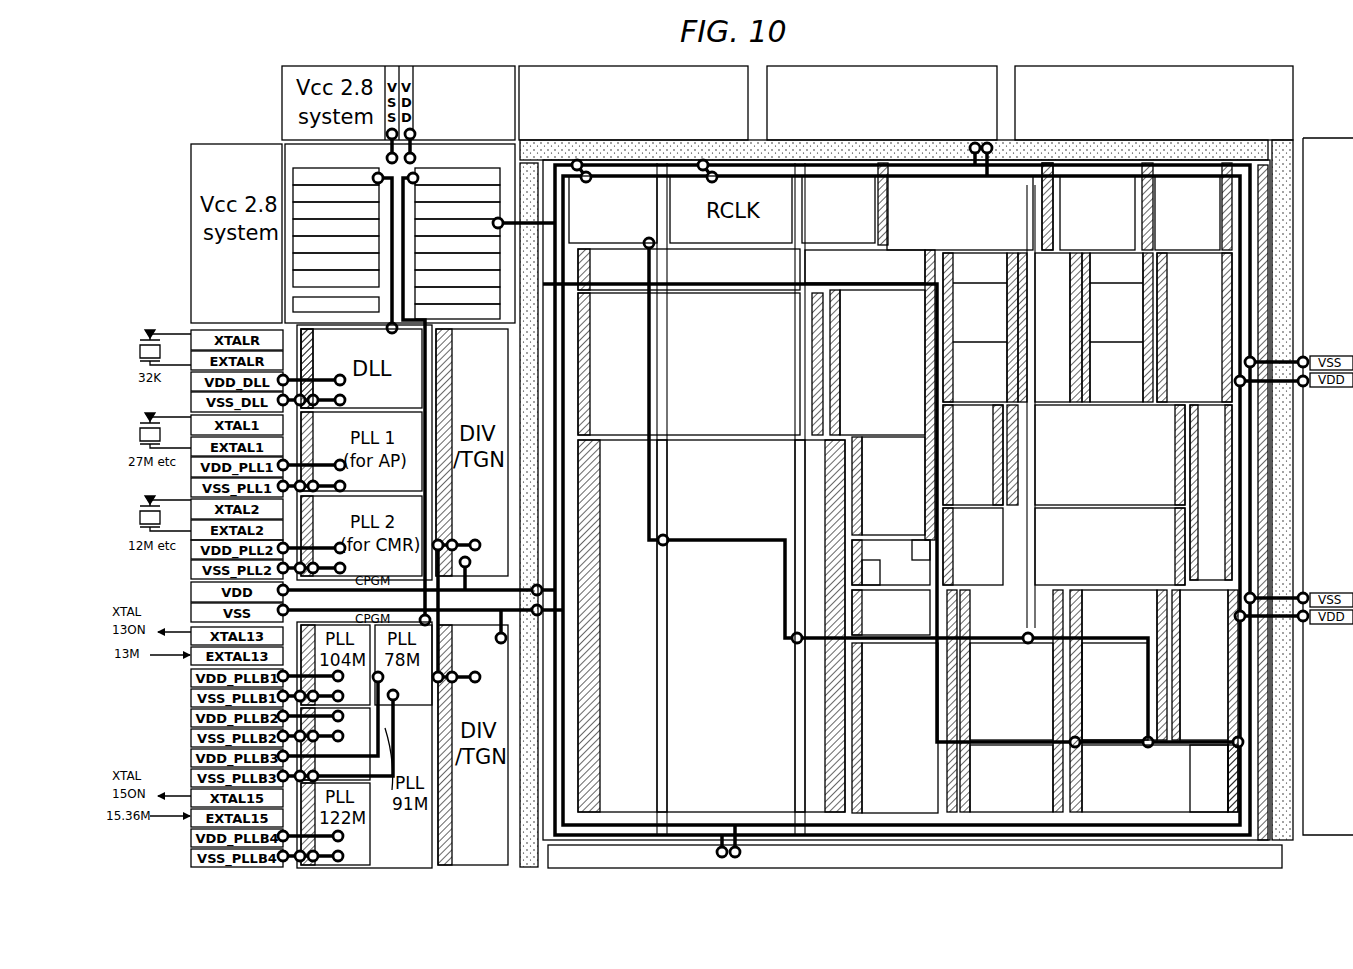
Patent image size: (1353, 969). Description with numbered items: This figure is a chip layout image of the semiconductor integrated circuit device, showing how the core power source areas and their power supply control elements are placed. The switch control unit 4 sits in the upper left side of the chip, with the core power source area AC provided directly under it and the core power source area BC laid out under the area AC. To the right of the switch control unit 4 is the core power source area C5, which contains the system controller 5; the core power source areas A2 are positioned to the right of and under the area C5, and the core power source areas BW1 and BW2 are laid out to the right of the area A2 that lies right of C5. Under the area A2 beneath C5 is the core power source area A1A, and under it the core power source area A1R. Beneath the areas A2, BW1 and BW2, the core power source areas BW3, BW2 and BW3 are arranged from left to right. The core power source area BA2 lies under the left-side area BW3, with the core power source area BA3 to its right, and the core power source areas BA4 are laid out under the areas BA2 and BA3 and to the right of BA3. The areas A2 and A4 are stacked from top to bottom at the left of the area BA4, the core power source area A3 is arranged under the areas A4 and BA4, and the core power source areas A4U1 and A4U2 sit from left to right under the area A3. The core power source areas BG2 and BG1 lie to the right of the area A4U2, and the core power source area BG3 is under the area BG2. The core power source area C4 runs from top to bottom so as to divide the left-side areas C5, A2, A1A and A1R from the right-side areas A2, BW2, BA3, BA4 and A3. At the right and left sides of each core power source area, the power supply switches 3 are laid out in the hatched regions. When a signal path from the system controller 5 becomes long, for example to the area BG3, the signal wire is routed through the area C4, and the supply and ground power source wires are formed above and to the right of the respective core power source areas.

The power supply switch 3 is at (314, 365).
The switch control unit 4 is at (298, 150).
The system controller 5 is at (655, 203).
The core power source area AC is at (300, 338).
The core power source area BC is at (300, 800).
The core power source area A1A is at (658, 346).
The core power source area A1R is at (706, 455).
The core power source area A2 is at (822, 262).
The core power source area A3 is at (1011, 691).
The core power source area A4 is at (870, 558).
The core power source area A4U1 is at (968, 792).
The core power source area A4U2 is at (950, 760).
The core power source area BA2 is at (973, 546).
The core power source area BA3 is at (1110, 546).
The core power source area BA4 is at (1155, 665).
The core power source area BG1 is at (1209, 778).
The core power source area BG2 is at (1174, 646).
The core power source area BG3 is at (1115, 691).
The core power source area BW1 is at (1093, 190).
The core power source area BW2 is at (1072, 324).
The core power source area BW3 is at (972, 235).
The core power source area C4 is at (660, 620).
The core power source area C5 is at (830, 157).